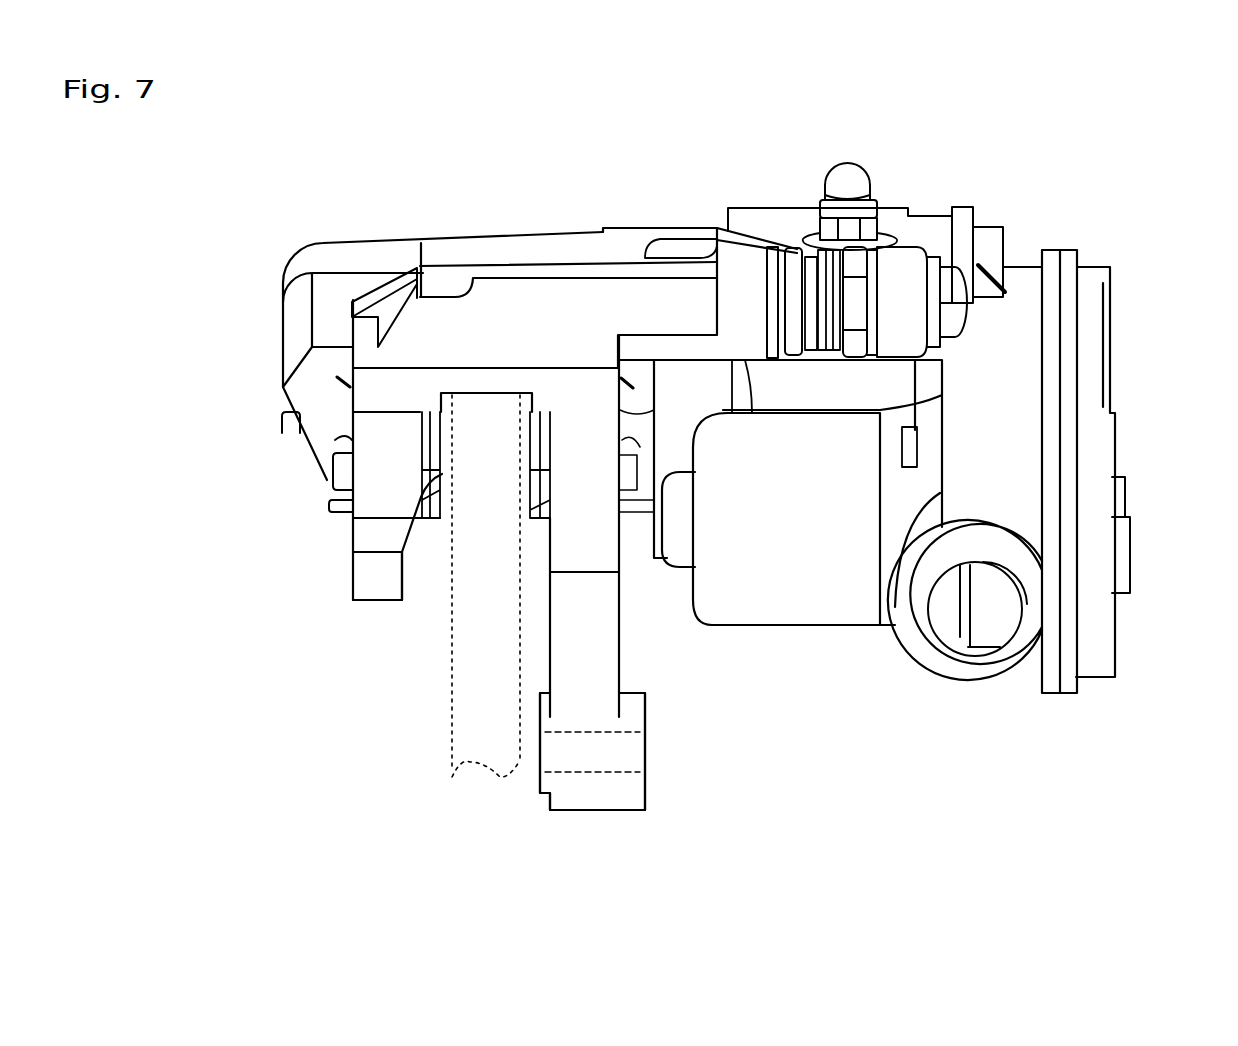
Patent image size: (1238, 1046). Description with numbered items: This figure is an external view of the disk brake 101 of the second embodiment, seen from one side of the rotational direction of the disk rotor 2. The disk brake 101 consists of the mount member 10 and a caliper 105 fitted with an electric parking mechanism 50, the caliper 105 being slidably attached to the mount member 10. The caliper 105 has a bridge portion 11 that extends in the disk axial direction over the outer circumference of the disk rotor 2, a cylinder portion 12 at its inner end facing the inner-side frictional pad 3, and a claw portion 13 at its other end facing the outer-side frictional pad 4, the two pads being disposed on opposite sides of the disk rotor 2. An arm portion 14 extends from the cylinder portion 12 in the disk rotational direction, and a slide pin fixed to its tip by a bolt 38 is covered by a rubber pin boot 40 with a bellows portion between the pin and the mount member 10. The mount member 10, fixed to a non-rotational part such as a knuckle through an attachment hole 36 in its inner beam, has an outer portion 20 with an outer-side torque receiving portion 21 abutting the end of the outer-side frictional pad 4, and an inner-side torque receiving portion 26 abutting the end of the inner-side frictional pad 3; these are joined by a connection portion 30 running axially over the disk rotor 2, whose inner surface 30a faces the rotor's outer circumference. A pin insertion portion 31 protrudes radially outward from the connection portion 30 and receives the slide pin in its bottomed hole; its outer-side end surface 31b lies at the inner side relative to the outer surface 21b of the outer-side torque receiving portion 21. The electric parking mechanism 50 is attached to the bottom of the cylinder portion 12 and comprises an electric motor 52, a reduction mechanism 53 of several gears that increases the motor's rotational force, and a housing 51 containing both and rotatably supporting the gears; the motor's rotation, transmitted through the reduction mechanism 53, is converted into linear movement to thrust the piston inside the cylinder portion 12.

The disk rotor 2 is at (452, 673).
The inner-side frictional pad 3 is at (530, 520).
The outer-side frictional pad 4 is at (353, 507).
The mount member 10 is at (658, 793).
The bridge portion 11 is at (487, 248).
The cylinder portion 12 is at (887, 388).
The claw portion 13 is at (295, 332).
The arm portion 14 is at (893, 267).
The outer portion 20 is at (328, 582).
The outer-side torque receiving portion 21 is at (352, 468).
The surface of the outer-side torque receiving portion 21b is at (352, 423).
The inner-side torque receiving portion 26 is at (592, 497).
The connection portion 30 is at (467, 380).
The inner surface of the connection portion 30a is at (490, 405).
The pin insertion portion 31 is at (553, 290).
The outer-side end surface of the pin insertion portion 31b is at (387, 300).
The attachment hole 36 is at (627, 733).
The bolt 38 is at (975, 263).
The rubber pin boot 40 is at (812, 283).
The electric parking mechanism 50 is at (1125, 337).
The housing 51 is at (1095, 443).
The electric motor 52 is at (807, 602).
The reduction mechanism 53 is at (888, 613).
The disk brake 101 is at (1135, 243).
The caliper 105 is at (928, 205).